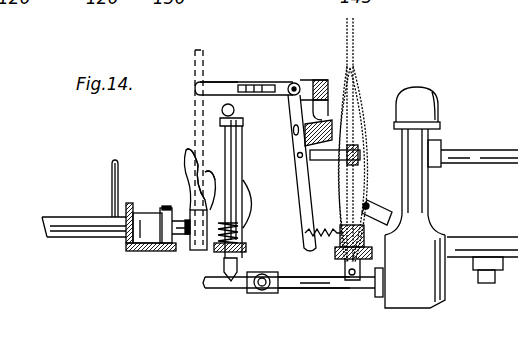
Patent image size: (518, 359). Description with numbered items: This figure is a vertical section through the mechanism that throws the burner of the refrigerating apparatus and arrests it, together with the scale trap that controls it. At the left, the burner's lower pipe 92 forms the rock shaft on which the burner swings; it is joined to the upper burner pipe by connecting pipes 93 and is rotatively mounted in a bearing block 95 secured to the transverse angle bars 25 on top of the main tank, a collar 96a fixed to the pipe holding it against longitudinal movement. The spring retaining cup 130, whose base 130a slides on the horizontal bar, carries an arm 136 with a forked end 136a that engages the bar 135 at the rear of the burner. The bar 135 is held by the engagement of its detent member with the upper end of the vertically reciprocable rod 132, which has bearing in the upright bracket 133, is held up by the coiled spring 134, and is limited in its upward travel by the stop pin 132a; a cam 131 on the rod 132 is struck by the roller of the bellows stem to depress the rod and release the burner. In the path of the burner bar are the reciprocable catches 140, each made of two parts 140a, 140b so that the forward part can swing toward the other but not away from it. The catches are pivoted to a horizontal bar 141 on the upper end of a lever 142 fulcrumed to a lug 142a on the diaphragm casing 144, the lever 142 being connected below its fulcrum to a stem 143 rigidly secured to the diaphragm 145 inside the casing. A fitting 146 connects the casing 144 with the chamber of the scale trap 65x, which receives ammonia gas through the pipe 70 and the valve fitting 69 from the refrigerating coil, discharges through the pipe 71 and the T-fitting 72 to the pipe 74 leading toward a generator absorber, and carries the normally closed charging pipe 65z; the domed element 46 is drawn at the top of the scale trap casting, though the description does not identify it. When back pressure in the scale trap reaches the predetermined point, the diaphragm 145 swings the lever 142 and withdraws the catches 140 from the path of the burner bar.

The transverse angle bars 25 is at (126, 243).
The cap 46 is at (427, 92).
The scale trap 65x is at (434, 223).
The charging pipe 65z is at (485, 240).
The fitting 69 is at (432, 138).
The pipe 70 is at (470, 152).
The pipe 71 is at (304, 289).
The T-fitting 72 is at (277, 294).
The pipe 74 is at (210, 289).
The lower pipe 92 is at (77, 216).
The pipes 93 is at (114, 161).
The bearing block 95 is at (125, 248).
The collar 96a is at (186, 205).
The spring retaining cup 130 is at (244, 223).
The base of cup 130a is at (238, 252).
The cam 131 is at (237, 197).
The vertically reciprocable rod 132 is at (221, 112).
The stop pin 132a is at (238, 266).
The upright bracket 133 is at (243, 141).
The coiled spring 134 is at (200, 242).
The bar 135 is at (196, 142).
The arm 136 is at (193, 175).
The forked end 136a is at (200, 158).
The reciprocable catches 140 is at (250, 78).
The catch part 140a is at (228, 84).
The catch part 140b is at (279, 84).
The horizontal bar 141 is at (295, 83).
The lever 142 is at (289, 106).
The lug 142a is at (293, 128).
The stem 143 is at (350, 125).
The diaphragm casing 144 is at (333, 173).
The diaphragm 145 is at (352, 160).
The fitting 146 is at (380, 208).